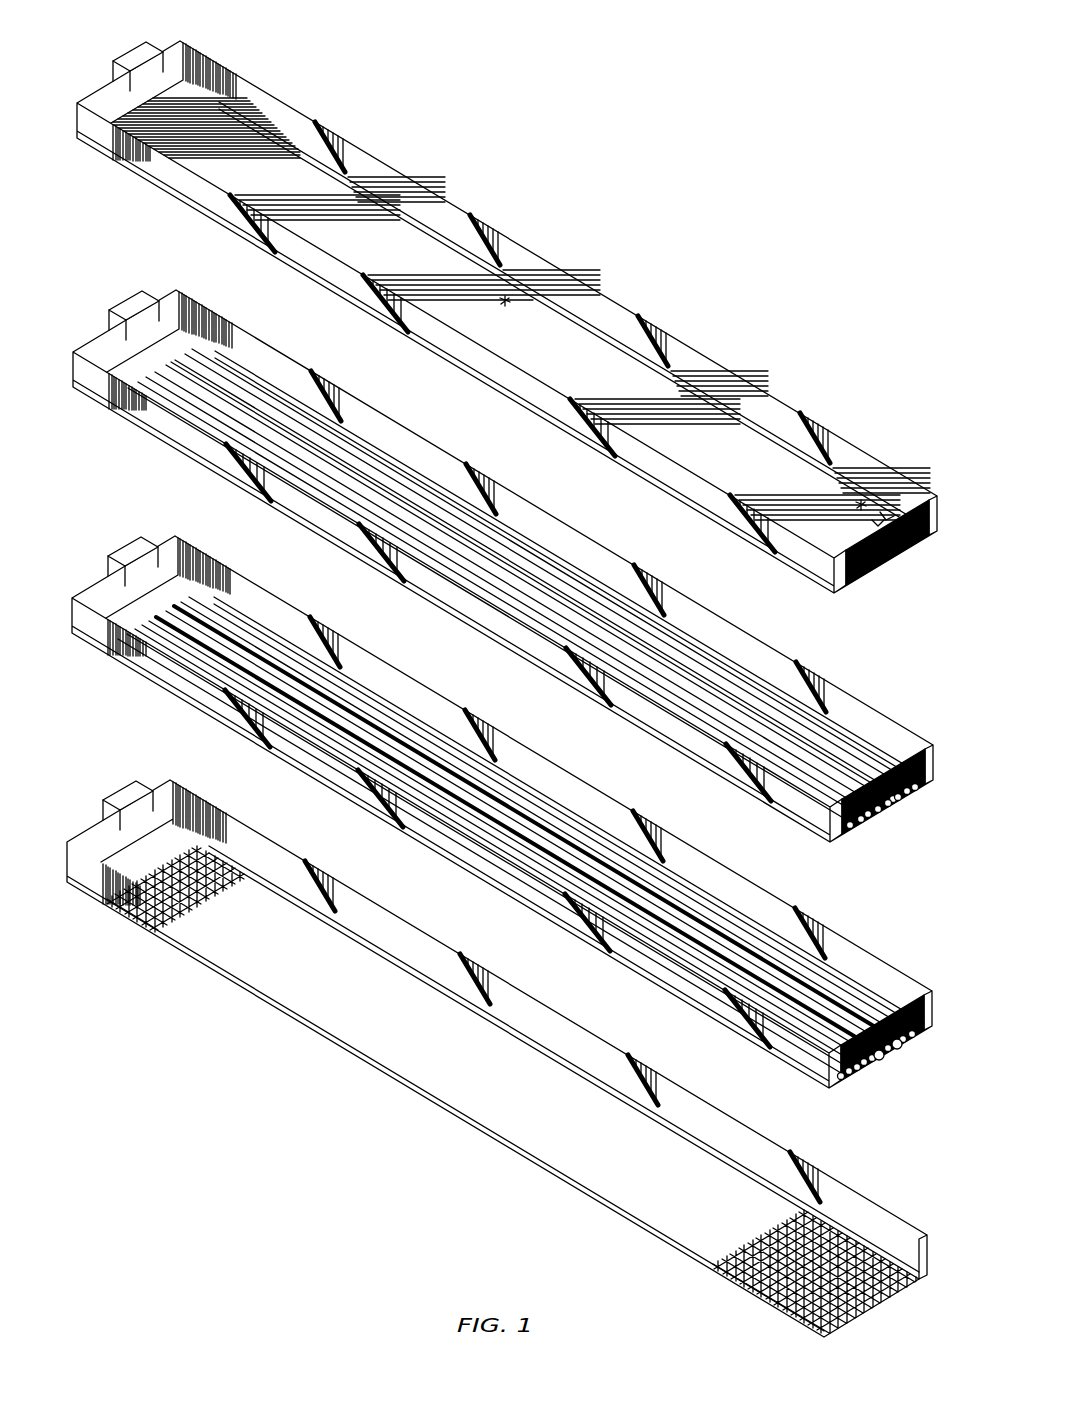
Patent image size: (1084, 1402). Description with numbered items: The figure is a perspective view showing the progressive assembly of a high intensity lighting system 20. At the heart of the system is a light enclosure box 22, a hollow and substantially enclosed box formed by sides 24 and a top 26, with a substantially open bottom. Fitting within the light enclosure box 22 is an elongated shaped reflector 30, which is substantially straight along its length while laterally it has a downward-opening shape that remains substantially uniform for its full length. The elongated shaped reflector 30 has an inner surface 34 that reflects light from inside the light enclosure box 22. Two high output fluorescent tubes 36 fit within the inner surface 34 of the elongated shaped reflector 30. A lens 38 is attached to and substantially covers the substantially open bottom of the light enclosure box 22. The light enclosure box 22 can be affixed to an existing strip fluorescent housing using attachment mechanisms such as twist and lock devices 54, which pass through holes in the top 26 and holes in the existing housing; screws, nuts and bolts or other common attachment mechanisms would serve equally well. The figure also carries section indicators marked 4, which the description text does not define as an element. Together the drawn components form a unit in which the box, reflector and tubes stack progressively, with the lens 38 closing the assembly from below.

The high intensity lighting system 20 is at (563, 266).
The light enclosure box 22 is at (620, 308).
The sides 24 is at (178, 46).
The top 26 is at (411, 264).
The elongated shaped reflector 30 is at (335, 518).
The inner surface 34 is at (570, 597).
The high output fluorescent tubes 36 is at (415, 735).
The lens 38 is at (130, 918).
The twist and lock devices 54 is at (505, 305).
The section line 4 is at (577, 985).